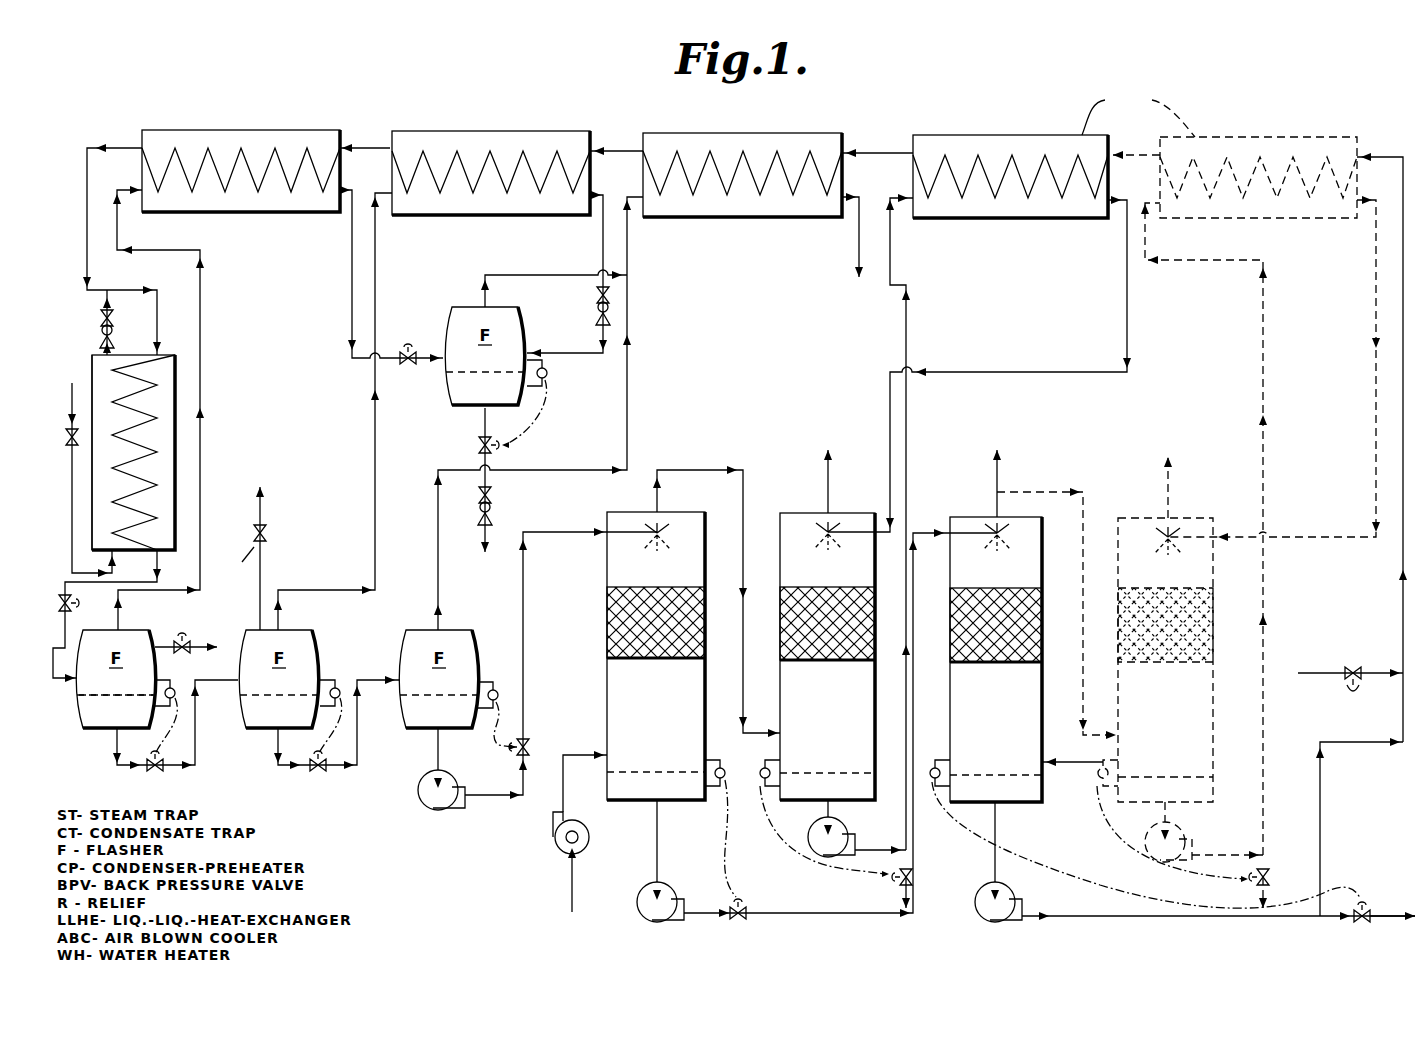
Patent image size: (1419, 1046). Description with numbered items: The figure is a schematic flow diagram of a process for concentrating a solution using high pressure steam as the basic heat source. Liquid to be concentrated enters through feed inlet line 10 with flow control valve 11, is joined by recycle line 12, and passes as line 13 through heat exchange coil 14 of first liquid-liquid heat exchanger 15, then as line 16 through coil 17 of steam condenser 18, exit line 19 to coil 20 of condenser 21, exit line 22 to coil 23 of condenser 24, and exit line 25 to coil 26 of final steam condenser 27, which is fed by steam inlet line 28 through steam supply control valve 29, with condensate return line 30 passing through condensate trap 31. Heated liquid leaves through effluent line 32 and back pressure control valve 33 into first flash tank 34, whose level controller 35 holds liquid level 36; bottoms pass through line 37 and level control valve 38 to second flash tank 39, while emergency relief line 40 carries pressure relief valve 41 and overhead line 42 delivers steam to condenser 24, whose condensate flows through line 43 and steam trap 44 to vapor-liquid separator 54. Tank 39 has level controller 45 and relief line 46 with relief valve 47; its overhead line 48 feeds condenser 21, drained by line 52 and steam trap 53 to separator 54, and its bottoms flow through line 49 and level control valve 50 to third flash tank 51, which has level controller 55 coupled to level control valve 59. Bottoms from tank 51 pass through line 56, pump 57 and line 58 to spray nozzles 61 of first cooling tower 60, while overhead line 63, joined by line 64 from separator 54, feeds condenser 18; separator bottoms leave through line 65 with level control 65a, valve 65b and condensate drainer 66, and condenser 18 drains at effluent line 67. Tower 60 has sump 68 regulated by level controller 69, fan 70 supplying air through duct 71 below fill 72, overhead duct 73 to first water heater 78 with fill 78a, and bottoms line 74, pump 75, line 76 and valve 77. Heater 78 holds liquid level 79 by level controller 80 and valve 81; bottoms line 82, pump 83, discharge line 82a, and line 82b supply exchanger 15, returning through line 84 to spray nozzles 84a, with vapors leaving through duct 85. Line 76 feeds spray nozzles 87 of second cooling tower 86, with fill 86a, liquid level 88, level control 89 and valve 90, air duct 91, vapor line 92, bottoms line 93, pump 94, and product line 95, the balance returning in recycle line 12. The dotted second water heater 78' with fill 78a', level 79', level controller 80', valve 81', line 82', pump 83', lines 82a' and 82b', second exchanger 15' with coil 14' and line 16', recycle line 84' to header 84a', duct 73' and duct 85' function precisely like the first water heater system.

The feed inlet line 10 is at (1310, 674).
The flow control valve 11 is at (1360, 688).
The recycle line 12 is at (1321, 810).
The line 13 is at (1400, 602).
The heat exchange coil 14 is at (1010, 198).
The heat exchange coil 14' is at (1258, 199).
The first heat exchanger 15 is at (1054, 163).
The second liquid-liquid heat exchanger 15' is at (1258, 169).
The line 16 is at (877, 129).
The line 16' is at (1134, 135).
The heat exchange coil 17 is at (756, 198).
The second heat exchanger or steam condenser 18 is at (742, 175).
The exit line 19 is at (622, 151).
The heat exchange coil 20 is at (491, 171).
The third heat exchanger or steam condenser 21 is at (506, 215).
The exit line 22 is at (370, 148).
The heat exchange coil 23 is at (258, 200).
The fourth heat exchanger or condenser 24 is at (241, 170).
The exit line 25 is at (108, 146).
The heat exchange coil 26 is at (165, 385).
The final steam condenser 27 is at (162, 427).
The steam inlet line 28 is at (92, 480).
The steam supply control valve 29 is at (66, 437).
The condensate return line 30 is at (104, 316).
The condensate trap 31 is at (98, 330).
The effluent line 32 is at (144, 582).
The back pressure control valve 33 is at (80, 612).
The first flash vaporization tank 34 is at (118, 663).
The level controller 35 is at (178, 688).
The liquid level 36 is at (107, 693).
The line 37 is at (115, 750).
The level control valve 38 is at (158, 770).
The second flash tank 39 is at (318, 630).
The emergency relief line 40 is at (194, 625).
The pressure relief valve 41 is at (184, 640).
The overhead line 42 is at (202, 452).
The line 43 is at (350, 270).
The steam trap 44 is at (406, 350).
The level controller 45 is at (337, 686).
The emergency relief line 46 is at (262, 505).
The pressure relief valve 47 is at (274, 536).
The overhead line 48 is at (372, 450).
The line 49 is at (273, 750).
The level control valve 50 is at (320, 770).
The third flash tank 51 is at (478, 630).
The line 52 is at (600, 243).
The steam trap 53 is at (596, 307).
The vapor-liquid separator 54 is at (458, 307).
The level controller 55 is at (494, 688).
The line 56 is at (432, 748).
The pump 57 is at (430, 804).
The line 58 is at (527, 586).
The level control valve 59 is at (532, 747).
The first air blown cooler or cooling tower 60 is at (613, 643).
The distribution header or spray nozzles 61 is at (662, 533).
The line 63 is at (436, 548).
The line 64 is at (536, 275).
The line 65 is at (480, 422).
The level control 65a is at (546, 373).
The level control valve 65b is at (477, 450).
The condensate drainer 66 is at (494, 505).
The effluent line 67 is at (857, 243).
The sump 68 is at (672, 772).
The level controller 69 is at (718, 760).
The centrifugal blower or propeller fan 70 is at (590, 838).
The duct 71 is at (564, 790).
The fill 72 is at (658, 658).
The duct or line 73 is at (716, 590).
The duct or line 73' is at (1057, 600).
The line 74 is at (658, 847).
The pump 75 is at (637, 906).
The line 76 is at (768, 914).
The valve 77 is at (742, 904).
The first water heater 78 is at (827, 638).
The second water heater 78' is at (1165, 641).
The fill 78a is at (827, 611).
The fill 78a' is at (1165, 612).
The liquid level 79 is at (827, 758).
The liquid level 79' is at (1165, 762).
The level controller 80 is at (761, 760).
The level controller 80' is at (1126, 761).
The valve 81 is at (882, 891).
The valve 81' is at (1242, 886).
The line 82 is at (857, 828).
The line 82' is at (1204, 832).
The line 82a is at (883, 907).
The line 82a' is at (1285, 878).
The line 82b is at (924, 522).
The line 82b' is at (1233, 529).
The pump 83 is at (824, 840).
The pump 83' is at (1172, 834).
The line 84 is at (1003, 364).
The line 84' is at (1274, 368).
The distribution header or spray nozzles 84a is at (845, 516).
The distribution header or spray nozzles 84a' is at (1154, 541).
The duct or line 85 is at (813, 478).
The duct or line 85' is at (1187, 487).
The second air blown cooler or cooling tower 86 is at (989, 642).
The fill 86a is at (1010, 592).
The distribution header or spray nozzles 87 is at (1000, 533).
The liquid level 88 is at (978, 775).
The level control 89 is at (936, 762).
The valve 90 is at (1362, 905).
The duct 91 is at (1068, 765).
The line 92 is at (992, 467).
The line 93 is at (994, 860).
The pump 94 is at (988, 918).
The line 95 is at (1390, 912).